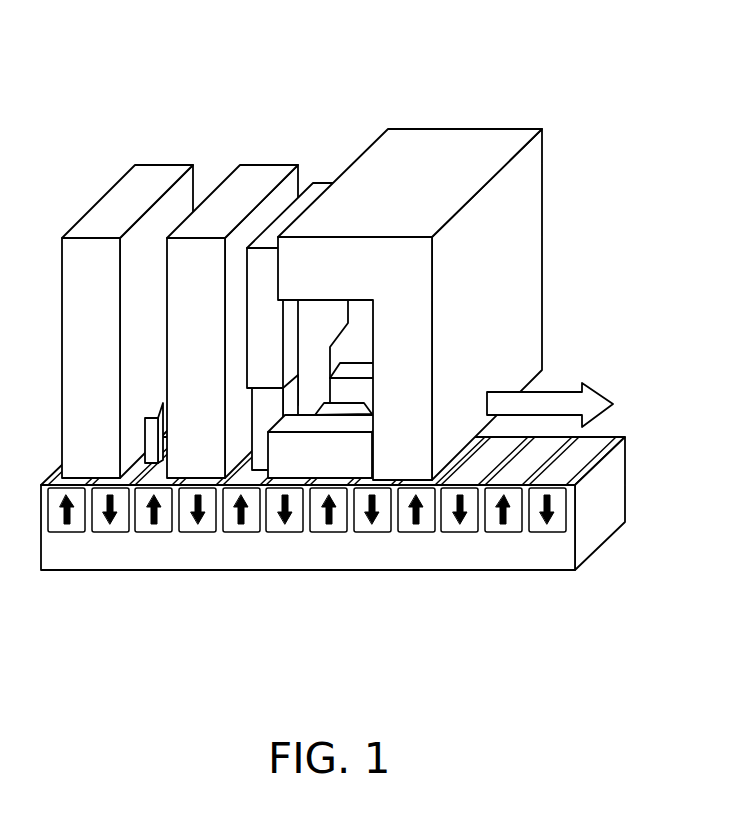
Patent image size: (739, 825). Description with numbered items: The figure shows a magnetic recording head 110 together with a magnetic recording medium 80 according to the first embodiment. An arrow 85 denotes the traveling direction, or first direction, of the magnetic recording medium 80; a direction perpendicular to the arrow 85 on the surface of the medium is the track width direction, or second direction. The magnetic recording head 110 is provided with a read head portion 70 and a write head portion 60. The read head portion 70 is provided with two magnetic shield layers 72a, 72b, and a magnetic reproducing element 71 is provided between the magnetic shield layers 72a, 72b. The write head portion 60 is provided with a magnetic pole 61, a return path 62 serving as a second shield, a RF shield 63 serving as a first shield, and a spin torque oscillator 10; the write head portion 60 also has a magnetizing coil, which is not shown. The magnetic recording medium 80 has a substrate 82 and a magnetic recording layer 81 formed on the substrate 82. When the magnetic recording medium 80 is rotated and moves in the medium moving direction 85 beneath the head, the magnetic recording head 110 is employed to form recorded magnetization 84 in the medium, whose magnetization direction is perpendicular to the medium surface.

The magnetic recording head 110 is at (548, 112).
The magnetic recording medium 80 is at (127, 635).
The magnetic recording layer 81 is at (66, 522).
The substrate 82 is at (110, 550).
The recorded magnetization 84 is at (155, 522).
The read head portion 70 is at (137, 107).
The magnetic shield layer 72a is at (152, 180).
The magnetic shield layer 72b is at (253, 180).
The magnetic reproducing element 71 is at (148, 418).
The write head portion 60 is at (420, 647).
The magnetic pole 61 is at (267, 455).
The return path 62 is at (398, 468).
The RF shield 63 is at (357, 453).
The spin torque oscillator 10 is at (335, 407).
The medium moving direction 85 is at (557, 395).